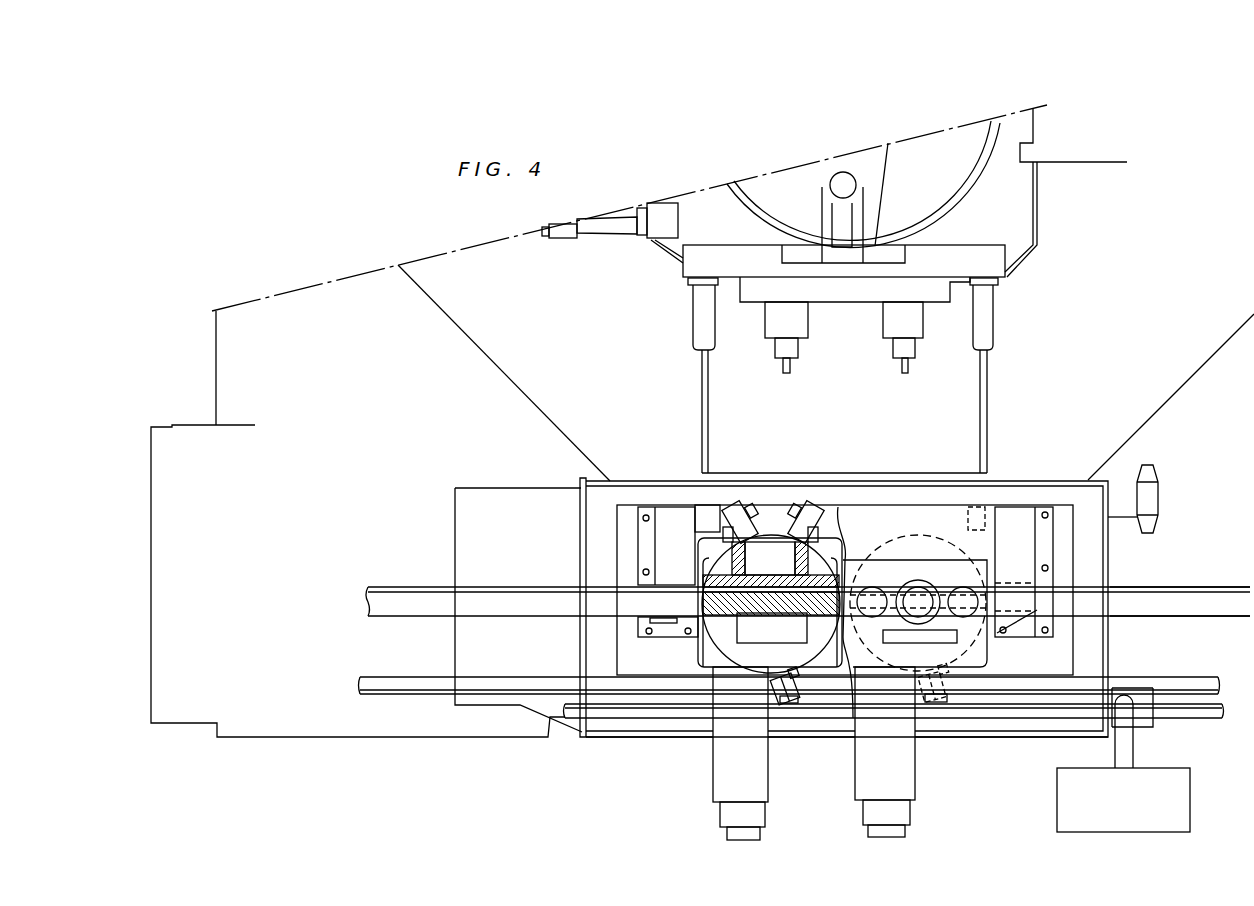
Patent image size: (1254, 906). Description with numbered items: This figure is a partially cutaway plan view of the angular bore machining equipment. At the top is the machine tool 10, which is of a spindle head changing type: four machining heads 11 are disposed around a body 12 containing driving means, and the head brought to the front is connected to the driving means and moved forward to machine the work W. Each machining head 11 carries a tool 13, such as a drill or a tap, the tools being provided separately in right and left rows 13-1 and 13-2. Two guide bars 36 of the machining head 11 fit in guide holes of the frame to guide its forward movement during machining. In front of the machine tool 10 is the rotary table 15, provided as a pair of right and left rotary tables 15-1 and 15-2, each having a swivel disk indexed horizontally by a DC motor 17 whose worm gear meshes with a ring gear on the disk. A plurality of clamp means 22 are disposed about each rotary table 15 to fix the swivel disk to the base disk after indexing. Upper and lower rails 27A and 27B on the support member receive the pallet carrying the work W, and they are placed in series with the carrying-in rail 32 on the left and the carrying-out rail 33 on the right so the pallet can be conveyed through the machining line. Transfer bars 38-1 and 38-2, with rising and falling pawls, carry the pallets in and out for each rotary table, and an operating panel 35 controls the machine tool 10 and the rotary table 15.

The machine tool 10 is at (768, 160).
The machining head 11 is at (1034, 132).
The body 12 is at (895, 157).
The tool 13 is at (769, 354).
The right row of tools 13-1 is at (781, 368).
The left row of tools 13-2 is at (917, 370).
The rotary table 15 is at (736, 668).
The right rotary table 15-1 is at (713, 620).
The left rotary table 15-2 is at (968, 652).
The DC motor 17 is at (713, 793).
The clamp means 22 is at (737, 503).
The upper rail 27A is at (982, 652).
The lower rail 27B is at (698, 637).
The carrying-in rail 32 is at (390, 593).
The carrying-out rail 33 is at (1193, 597).
The operating panel 35 is at (1178, 807).
The guide bar 36 is at (700, 328).
The transfer bar 38-1 is at (1183, 710).
The transfer bar 38-2 is at (1183, 683).
The work W is at (800, 635).